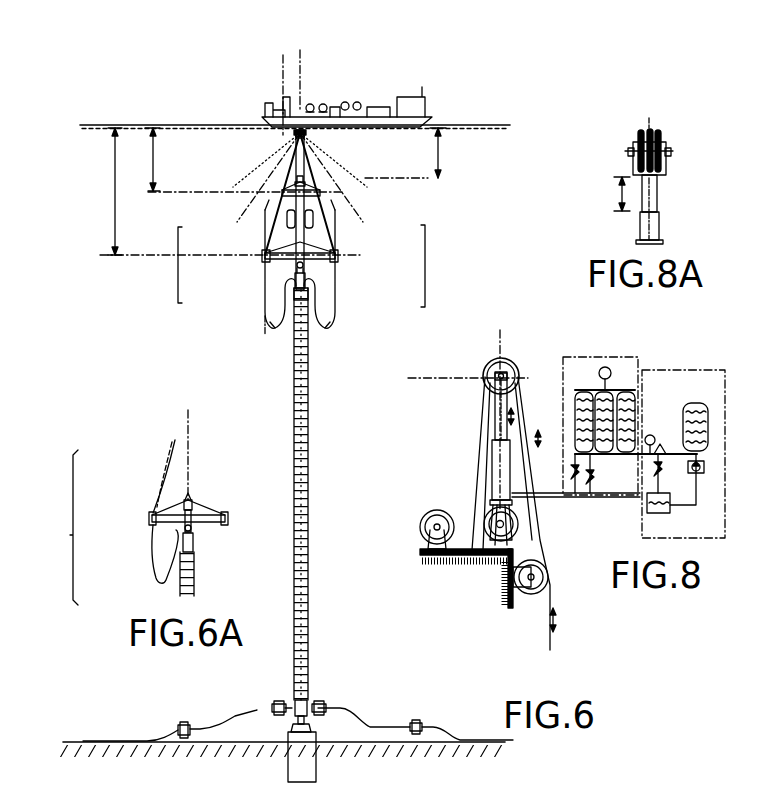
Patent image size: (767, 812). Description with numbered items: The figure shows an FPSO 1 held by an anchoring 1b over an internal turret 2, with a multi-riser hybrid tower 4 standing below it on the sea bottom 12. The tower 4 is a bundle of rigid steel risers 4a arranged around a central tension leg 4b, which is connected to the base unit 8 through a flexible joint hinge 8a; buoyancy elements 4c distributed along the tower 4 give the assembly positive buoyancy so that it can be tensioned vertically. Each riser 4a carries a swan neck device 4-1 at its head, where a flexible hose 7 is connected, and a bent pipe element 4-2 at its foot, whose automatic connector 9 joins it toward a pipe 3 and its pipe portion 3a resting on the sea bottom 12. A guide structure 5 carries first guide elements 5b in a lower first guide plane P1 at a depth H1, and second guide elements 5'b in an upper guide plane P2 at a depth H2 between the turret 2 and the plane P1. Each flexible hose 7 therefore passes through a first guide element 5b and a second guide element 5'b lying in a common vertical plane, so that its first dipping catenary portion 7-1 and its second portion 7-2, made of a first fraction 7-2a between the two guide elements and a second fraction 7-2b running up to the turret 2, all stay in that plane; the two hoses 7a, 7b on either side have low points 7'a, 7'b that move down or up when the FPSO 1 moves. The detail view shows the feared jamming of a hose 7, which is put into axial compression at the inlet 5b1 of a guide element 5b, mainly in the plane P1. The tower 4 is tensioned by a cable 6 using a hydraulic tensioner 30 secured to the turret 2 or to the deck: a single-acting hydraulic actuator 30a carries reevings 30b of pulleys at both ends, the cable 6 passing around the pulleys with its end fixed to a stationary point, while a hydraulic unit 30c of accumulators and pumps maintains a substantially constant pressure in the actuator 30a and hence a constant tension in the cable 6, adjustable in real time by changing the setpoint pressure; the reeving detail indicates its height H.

In FIG. 6, the FPSO 1 is at (252, 108).
In FIG. 6, the turret 2 is at (318, 136).
In FIG. 6, the anchoring 1b is at (313, 166).
In FIG. 6, the second guide element 5'b is at (341, 190).
In FIG. 6, the first guide element 5b is at (263, 258).
In FIG. 6A, the first guide element 5b is at (228, 518).
In FIG. 6A, the inlet of guide element 5b1 is at (150, 516).
In FIG. 6A, the guide structure 5 is at (195, 488).
In FIG. 6A, the flexible hose 7 is at (63, 527).
In FIG. 6, the first flexible hose portion 7-1 is at (263, 306).
In FIG. 6A, the first flexible hose portion 7-1 is at (153, 572).
In FIG. 6, the second pipe portion 7-2 is at (263, 222).
In FIG. 6A, the second pipe portion 7-2 is at (170, 466).
In FIG. 6, the first fraction of second pipe portion 7-2a is at (282, 194).
In FIG. 6, the second fraction of second pipe portion 7-2b is at (283, 148).
In FIG. 6, the flexible hose 7a is at (178, 272).
In FIG. 6, the flexible hose 7b is at (428, 263).
In FIG. 6, the low point 7'a is at (256, 343).
In FIG. 6, the low inflection point 7'b is at (364, 331).
In FIG. 6, the multi-riser hybrid tower 4 is at (322, 437).
In FIG. 6A, the multi-riser hybrid tower 4 is at (200, 590).
In FIG. 6, the rigid pipe 4a is at (310, 332).
In FIG. 6, the central tension leg 4b is at (312, 276).
In FIG. 6A, the central tension leg 4b is at (196, 545).
In FIG. 6, the buoyancy element 4c is at (309, 628).
In FIG. 6A, the buoyancy element 4c is at (196, 570).
In FIG. 6A, the swan neck device 4-1 is at (175, 540).
In FIG. 6, the bent pipe element 4-2 is at (320, 703).
In FIG. 6, the pipe 3 is at (145, 738).
In FIG. 6, the pipe portion 3a is at (232, 727).
In FIG. 6, the automatic connector 9 is at (184, 724).
In FIG. 6, the sea bottom 12 is at (73, 741).
In FIG. 6, the base unit 8 is at (318, 768).
In FIG. 6, the flexible joint hinge 8a is at (297, 722).
In FIG. 8, the tensioning cable 6 is at (553, 597).
In FIG. 8, the hydraulic tensioner 30 is at (478, 567).
In FIG. 8, the single-acting hydraulic actuator 30a is at (498, 470).
In FIG. 8, the reeving of pulleys 30b is at (512, 364).
In FIG. 8, the hydraulic unit 30c is at (668, 376).
In FIG. 6, the height H is at (410, 153).
In FIG. 8A, the height H is at (613, 194).
In FIG. 6, the depth of first guide plane H1 is at (107, 191).
In FIG. 6, the depth of second guide plane H2 is at (143, 159).
In FIG. 6, the first guide plane P1 is at (230, 245).
In FIG. 6, the upper guide plane P2 is at (246, 181).